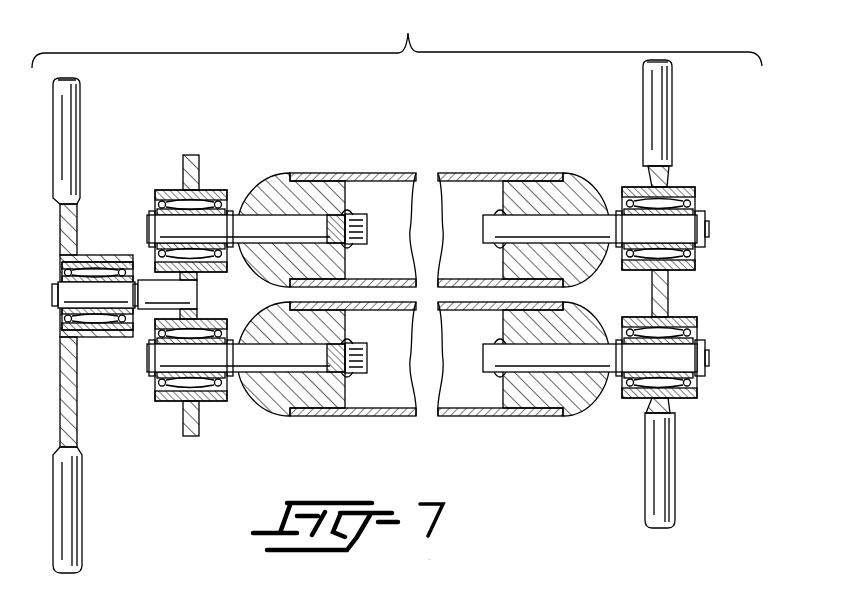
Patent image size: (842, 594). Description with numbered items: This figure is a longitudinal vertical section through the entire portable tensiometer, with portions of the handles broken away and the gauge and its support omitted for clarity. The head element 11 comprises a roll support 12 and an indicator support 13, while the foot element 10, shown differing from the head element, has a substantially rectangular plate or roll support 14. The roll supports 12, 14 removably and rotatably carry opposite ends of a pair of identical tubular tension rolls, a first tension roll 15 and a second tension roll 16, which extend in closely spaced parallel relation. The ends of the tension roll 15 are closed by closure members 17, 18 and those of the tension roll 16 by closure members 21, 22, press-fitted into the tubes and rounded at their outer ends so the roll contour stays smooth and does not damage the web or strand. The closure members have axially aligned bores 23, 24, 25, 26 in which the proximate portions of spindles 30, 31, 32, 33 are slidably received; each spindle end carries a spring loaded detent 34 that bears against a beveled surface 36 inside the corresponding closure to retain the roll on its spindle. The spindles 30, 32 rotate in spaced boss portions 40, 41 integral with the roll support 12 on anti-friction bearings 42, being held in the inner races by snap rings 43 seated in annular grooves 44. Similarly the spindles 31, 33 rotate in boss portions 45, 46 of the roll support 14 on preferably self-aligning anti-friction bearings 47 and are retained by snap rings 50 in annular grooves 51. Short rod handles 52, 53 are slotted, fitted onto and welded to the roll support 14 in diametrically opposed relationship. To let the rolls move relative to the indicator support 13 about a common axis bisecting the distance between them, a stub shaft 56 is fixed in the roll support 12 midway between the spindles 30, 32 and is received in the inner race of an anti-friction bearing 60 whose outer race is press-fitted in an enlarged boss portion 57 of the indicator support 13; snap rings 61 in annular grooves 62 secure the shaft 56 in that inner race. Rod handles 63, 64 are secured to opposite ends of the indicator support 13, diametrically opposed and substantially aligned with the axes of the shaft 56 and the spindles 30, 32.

The foot element 10 is at (677, 125).
The head element 11 is at (58, 229).
The roll support 12 is at (191, 155).
The indicator support 13 is at (62, 399).
The roll support 14 is at (664, 185).
The first tension roll 15 is at (443, 172).
The second tension roll 16 is at (411, 417).
The closure member 17 is at (262, 178).
The closure member 18 is at (578, 180).
The closure member 21 is at (262, 417).
The closure member 22 is at (572, 416).
The bore 23 is at (280, 238).
The bore 24 is at (562, 236).
The bore 25 is at (308, 365).
The bore 26 is at (538, 365).
The spindle 30 is at (268, 216).
The spindle 31 is at (541, 215).
The spindle 32 is at (292, 345).
The spindle 33 is at (541, 346).
The spring loaded detent 34 is at (349, 210).
The beveled surface 36 is at (351, 248).
The boss portion 40 is at (170, 190).
The boss portion 41 is at (165, 403).
The anti-friction bearing 42 is at (156, 198).
The snap ring 43 is at (150, 214).
The annular groove 44 is at (160, 228).
The boss portion 45 is at (692, 188).
The boss portion 46 is at (680, 400).
The anti-friction bearing 47 is at (695, 206).
The snap ring 50 is at (618, 206).
The annular groove 51 is at (640, 236).
The handle 52 is at (672, 86).
The handle 53 is at (672, 490).
The stub shaft 56 is at (199, 292).
The boss portion 57 is at (118, 257).
The anti-friction bearing 60 is at (63, 266).
The snap ring 61 is at (53, 309).
The annular groove 62 is at (72, 297).
The handle 63 is at (73, 104).
The handle 64 is at (78, 528).